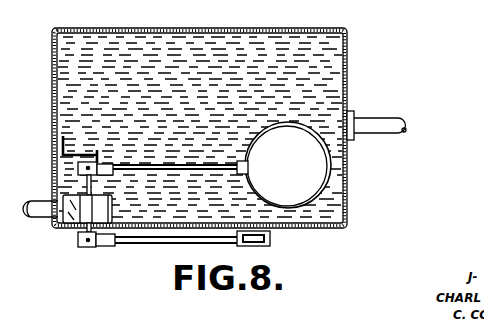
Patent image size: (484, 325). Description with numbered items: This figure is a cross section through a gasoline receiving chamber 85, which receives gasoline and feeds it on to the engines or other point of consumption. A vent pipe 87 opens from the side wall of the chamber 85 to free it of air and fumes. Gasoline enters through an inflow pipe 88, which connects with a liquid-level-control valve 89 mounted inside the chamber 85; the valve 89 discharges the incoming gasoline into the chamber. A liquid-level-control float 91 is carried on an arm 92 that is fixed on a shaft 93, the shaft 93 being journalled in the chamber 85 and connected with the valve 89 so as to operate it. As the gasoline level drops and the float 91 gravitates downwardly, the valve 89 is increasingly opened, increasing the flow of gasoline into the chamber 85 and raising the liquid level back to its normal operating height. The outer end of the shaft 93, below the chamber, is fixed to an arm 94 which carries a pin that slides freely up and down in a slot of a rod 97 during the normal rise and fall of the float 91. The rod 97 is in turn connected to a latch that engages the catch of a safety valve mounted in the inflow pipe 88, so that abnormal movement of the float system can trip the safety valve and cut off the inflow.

The gasoline receiving chamber 85 is at (346, 63).
The vent pipe 87 is at (390, 127).
The inflow pipe 88 is at (36, 212).
The liquid-level-control valve 89 is at (73, 228).
The liquid-level-control float 91 is at (288, 165).
The arm 92 is at (209, 165).
The shaft 93 is at (77, 183).
The arm 94 is at (131, 240).
The rod 97 is at (271, 241).